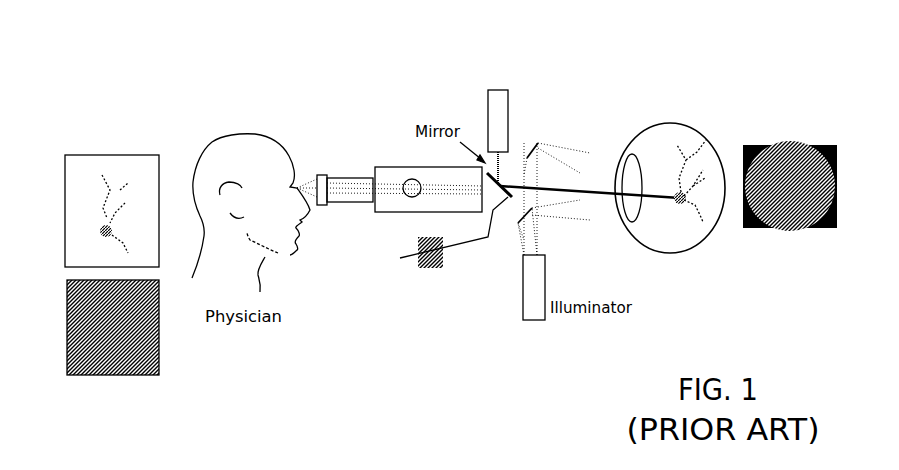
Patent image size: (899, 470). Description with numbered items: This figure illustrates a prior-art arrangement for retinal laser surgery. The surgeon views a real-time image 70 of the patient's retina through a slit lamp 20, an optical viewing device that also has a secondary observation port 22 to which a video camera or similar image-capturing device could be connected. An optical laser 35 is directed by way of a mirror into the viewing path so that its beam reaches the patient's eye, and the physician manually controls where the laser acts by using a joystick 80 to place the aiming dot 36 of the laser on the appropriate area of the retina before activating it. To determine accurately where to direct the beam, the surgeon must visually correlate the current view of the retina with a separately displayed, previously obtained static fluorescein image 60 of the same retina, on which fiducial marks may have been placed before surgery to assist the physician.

The slit lamp 20 is at (385, 214).
The secondary observation port 22 is at (403, 171).
The optical laser 35 is at (502, 125).
The aiming dot 36 is at (680, 205).
The fluorescein image 60 is at (65, 215).
The real-time image 70 is at (715, 232).
The joystick 80 is at (447, 263).